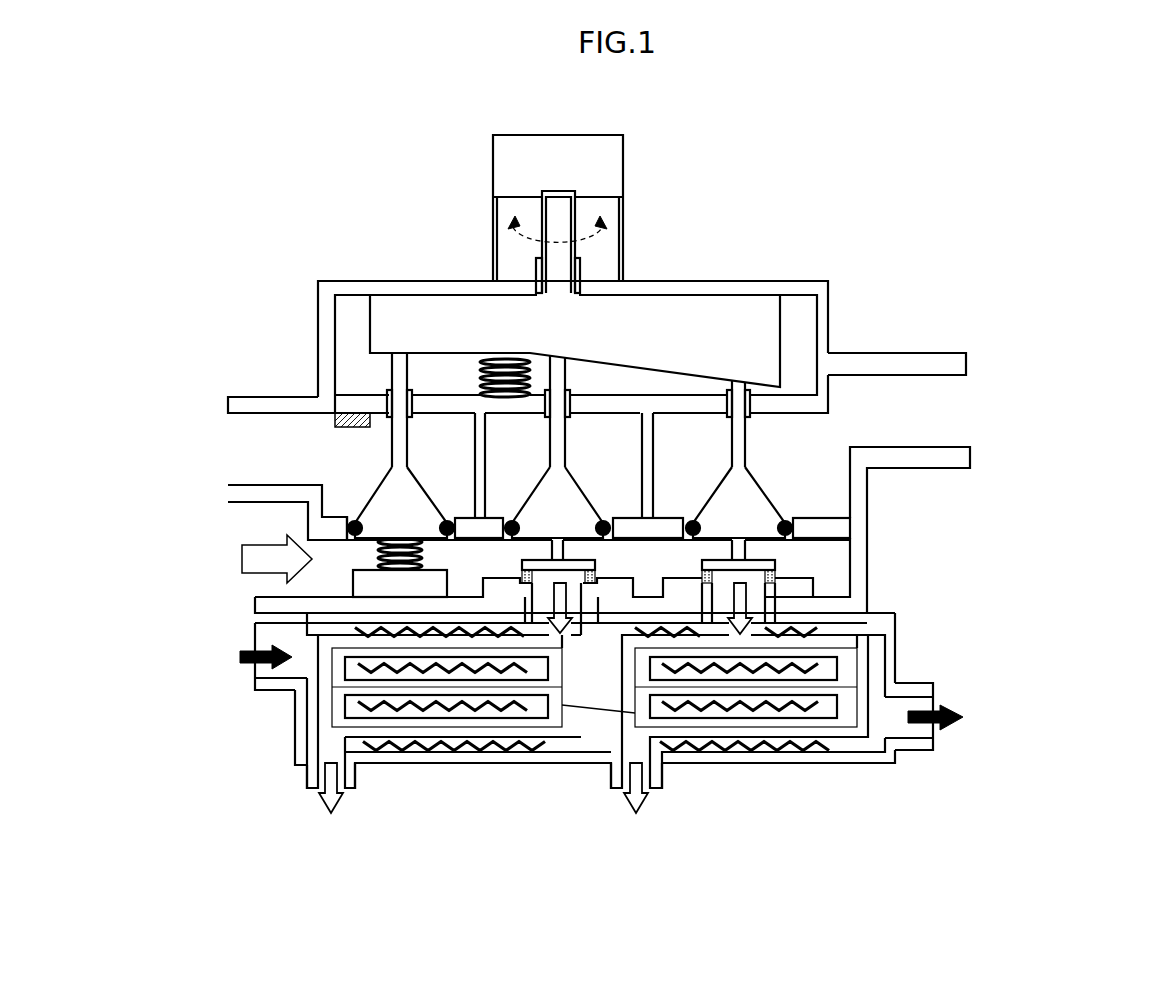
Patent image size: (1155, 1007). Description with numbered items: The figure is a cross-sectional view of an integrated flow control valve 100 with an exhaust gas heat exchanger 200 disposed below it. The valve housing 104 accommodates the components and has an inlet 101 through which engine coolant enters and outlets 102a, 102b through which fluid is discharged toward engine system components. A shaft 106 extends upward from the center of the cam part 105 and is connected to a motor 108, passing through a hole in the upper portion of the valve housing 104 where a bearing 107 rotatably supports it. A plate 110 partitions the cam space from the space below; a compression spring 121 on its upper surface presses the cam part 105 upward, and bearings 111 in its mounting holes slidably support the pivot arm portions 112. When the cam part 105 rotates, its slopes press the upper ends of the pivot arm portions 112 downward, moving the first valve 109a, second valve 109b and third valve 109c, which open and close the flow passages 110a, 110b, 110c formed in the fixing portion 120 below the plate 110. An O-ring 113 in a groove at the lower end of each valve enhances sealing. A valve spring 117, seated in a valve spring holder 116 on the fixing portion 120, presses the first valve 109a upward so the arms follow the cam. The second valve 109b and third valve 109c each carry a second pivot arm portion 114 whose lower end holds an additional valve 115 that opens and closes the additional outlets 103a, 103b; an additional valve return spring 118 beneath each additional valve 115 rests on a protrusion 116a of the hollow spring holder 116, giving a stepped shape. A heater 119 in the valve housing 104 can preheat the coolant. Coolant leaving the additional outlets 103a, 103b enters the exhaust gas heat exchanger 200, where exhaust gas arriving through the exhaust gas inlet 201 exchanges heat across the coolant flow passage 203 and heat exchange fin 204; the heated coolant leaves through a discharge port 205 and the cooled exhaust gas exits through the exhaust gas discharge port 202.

The integrated flow control valve 100 is at (893, 220).
The inlet 101 is at (243, 525).
The outlet 102a is at (243, 435).
The outlet 102b is at (945, 385).
The additional outlet 103a is at (545, 602).
The additional outlet 103b is at (717, 602).
The valve housing 104 is at (762, 288).
The cam part 105 is at (405, 313).
The shaft 106 is at (560, 213).
The bearing 107 is at (572, 267).
The motor 108 is at (607, 150).
The first valve 109a is at (368, 500).
The second valve 109b is at (588, 498).
The third valve 109c is at (768, 500).
The plate 110 is at (785, 393).
The flow passage 110a is at (365, 543).
The flow passage 110b is at (527, 545).
The flow passage 110c is at (710, 543).
The bearing 111 is at (757, 383).
The pivot arm portion 112 is at (745, 435).
The O-ring 113 is at (820, 518).
The second pivot arm portion 114 is at (742, 553).
The additional valve 115 is at (775, 567).
The valve spring holder 116 is at (810, 587).
The protrusion 116a is at (773, 592).
The valve spring 117 is at (422, 547).
The additional valve return spring 118 is at (645, 790).
The heater 119 is at (333, 420).
The fixing portion 120 is at (793, 525).
The compression spring 121 is at (505, 358).
The exhaust gas heat exchanger 200 is at (483, 790).
The exhaust gas inlet 201 is at (267, 670).
The exhaust gas discharge port 202 is at (913, 733).
The coolant flow passage 203 is at (598, 712).
The heat exchange fin 204 is at (445, 748).
The discharge port 205 is at (487, 816).